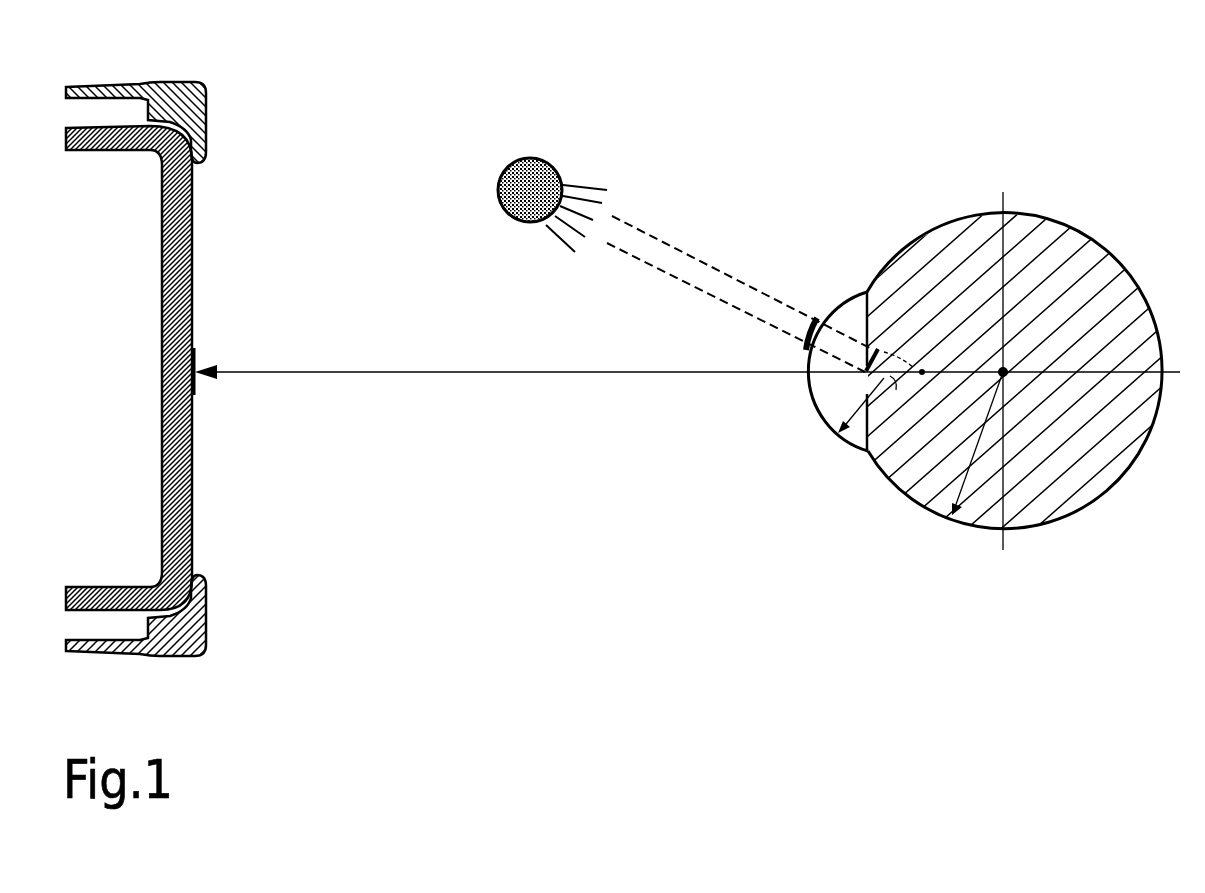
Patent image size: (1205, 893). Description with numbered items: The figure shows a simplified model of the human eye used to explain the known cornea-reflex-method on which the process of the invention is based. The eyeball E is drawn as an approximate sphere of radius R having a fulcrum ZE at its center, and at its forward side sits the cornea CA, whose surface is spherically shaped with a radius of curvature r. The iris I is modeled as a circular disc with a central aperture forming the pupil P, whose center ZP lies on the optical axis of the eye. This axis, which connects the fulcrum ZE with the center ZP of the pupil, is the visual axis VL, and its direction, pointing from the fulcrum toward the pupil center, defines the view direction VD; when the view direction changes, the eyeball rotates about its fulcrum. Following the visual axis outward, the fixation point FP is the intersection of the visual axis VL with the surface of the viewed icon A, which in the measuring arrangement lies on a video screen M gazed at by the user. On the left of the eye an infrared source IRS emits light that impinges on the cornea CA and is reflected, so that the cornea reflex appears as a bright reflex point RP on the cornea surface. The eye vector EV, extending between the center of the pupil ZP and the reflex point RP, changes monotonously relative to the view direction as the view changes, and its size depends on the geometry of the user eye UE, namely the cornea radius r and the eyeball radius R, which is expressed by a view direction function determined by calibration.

The video screen M is at (172, 83).
The fixation point FP is at (198, 368).
The viewed icon A is at (196, 386).
The view direction VD is at (390, 372).
The infrared source IRS is at (497, 190).
The reflex point RP is at (633, 288).
The eye vector EV is at (802, 327).
The cornea CA is at (805, 378).
The iris I is at (898, 272).
The eyeball E is at (1066, 262).
The user eyeball UE is at (968, 186).
The fulcrum ZE is at (1008, 369).
The visual axis VL is at (983, 362).
The radius of curvature of the cornea r is at (879, 410).
The radius of the eyeball R is at (985, 458).
The pupil P is at (867, 398).
The center of the pupil ZP is at (919, 380).